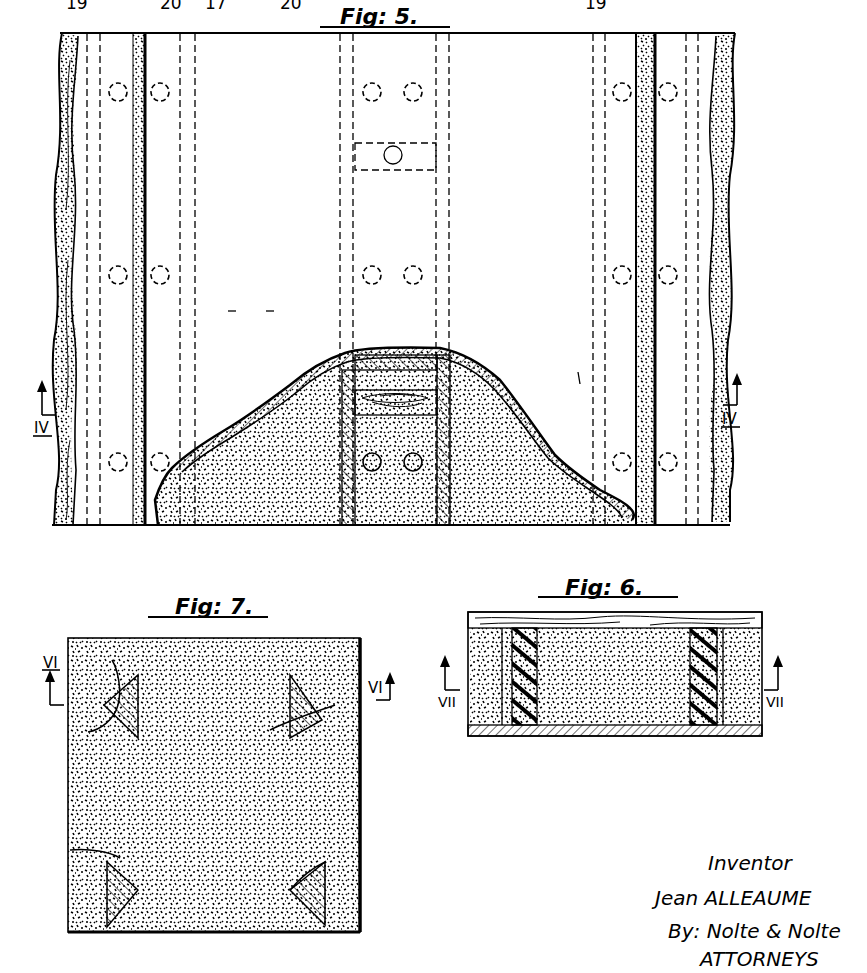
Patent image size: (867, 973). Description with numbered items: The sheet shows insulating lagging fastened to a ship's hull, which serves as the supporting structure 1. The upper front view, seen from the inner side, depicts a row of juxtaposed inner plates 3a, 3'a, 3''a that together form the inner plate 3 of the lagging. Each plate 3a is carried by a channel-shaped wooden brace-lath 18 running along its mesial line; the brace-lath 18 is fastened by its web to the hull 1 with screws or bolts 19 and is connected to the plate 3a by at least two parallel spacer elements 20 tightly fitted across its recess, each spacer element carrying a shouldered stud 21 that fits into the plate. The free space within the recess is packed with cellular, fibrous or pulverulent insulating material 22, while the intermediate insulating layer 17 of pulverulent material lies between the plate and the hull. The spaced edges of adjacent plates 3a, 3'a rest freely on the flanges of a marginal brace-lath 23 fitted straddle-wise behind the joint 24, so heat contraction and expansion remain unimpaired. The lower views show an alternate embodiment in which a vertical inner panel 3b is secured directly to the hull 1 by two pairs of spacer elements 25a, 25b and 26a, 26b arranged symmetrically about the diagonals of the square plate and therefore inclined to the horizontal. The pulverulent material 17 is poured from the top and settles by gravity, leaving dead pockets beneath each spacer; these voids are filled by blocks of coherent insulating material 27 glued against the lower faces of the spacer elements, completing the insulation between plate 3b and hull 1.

In FIG. 6, the supporting structure 1 is at (540, 737).
In FIG. 5, the inner plate 3 is at (567, 65).
In FIG. 5, the inner plate 3a is at (251, 310).
In FIG. 5, the juxtaposed adjacent plate 3'a is at (701, 296).
In FIG. 5, the juxtaposed panel 3''a is at (90, 296).
In FIG. 6, the inner panel 3b is at (510, 620).
In FIG. 7, the inner panel 3b is at (362, 646).
In FIG. 5, the intermediate insulating layer 17 is at (268, 505).
In FIG. 6, the intermediate insulating layer 17 is at (630, 715).
In FIG. 7, the intermediate insulating layer 17 is at (283, 652).
In FIG. 5, the brace-lath 18 is at (350, 522).
In FIG. 5, the screws 19 is at (170, 90).
In FIG. 5, the spacer elements 20 is at (430, 133).
In FIG. 5, the shouldered stud 21 is at (394, 164).
In FIG. 5, the insulating material 22 is at (450, 352).
In FIG. 5, the marginal brace-lath 23 is at (598, 350).
In FIG. 5, the joint 24 is at (146, 350).
In FIG. 7, the spacer element 25a is at (82, 845).
In FIG. 6, the spacer element 25b is at (722, 620).
In FIG. 7, the spacer element 25b is at (318, 705).
In FIG. 5, the spacer element 26a is at (530, 590).
In FIG. 7, the spacer element 26a is at (106, 650).
In FIG. 7, the spacer element 26b is at (320, 862).
In FIG. 6, the blocks of coherent insulating material 27 is at (522, 737).
In FIG. 7, the blocks of coherent insulating material 27 is at (110, 718).